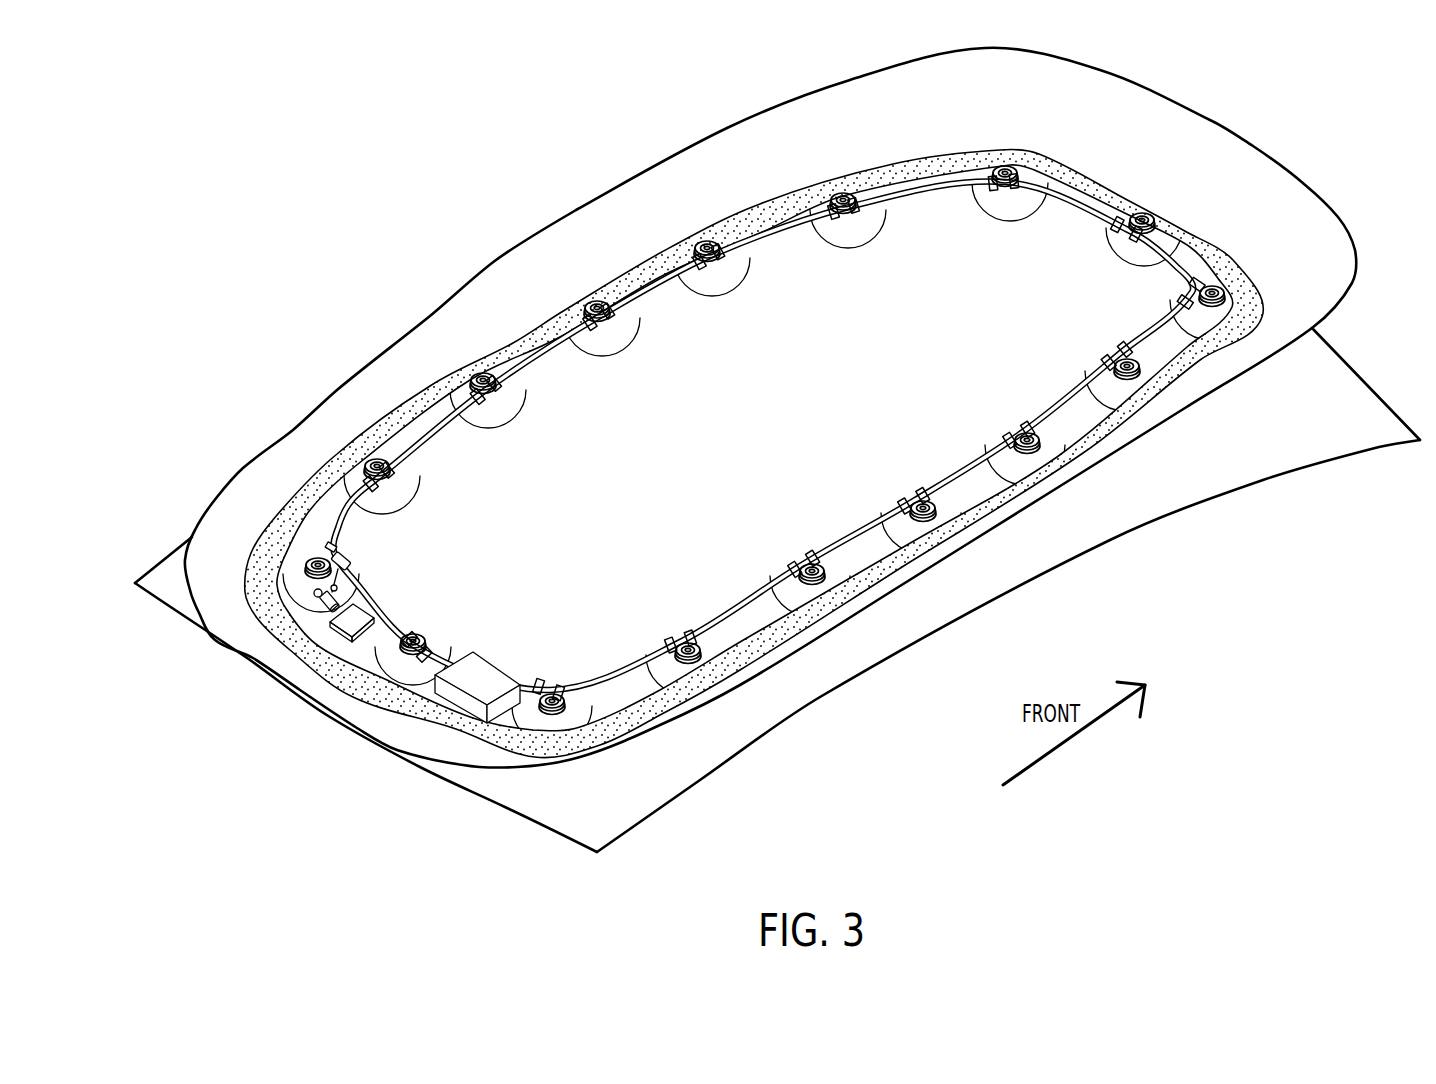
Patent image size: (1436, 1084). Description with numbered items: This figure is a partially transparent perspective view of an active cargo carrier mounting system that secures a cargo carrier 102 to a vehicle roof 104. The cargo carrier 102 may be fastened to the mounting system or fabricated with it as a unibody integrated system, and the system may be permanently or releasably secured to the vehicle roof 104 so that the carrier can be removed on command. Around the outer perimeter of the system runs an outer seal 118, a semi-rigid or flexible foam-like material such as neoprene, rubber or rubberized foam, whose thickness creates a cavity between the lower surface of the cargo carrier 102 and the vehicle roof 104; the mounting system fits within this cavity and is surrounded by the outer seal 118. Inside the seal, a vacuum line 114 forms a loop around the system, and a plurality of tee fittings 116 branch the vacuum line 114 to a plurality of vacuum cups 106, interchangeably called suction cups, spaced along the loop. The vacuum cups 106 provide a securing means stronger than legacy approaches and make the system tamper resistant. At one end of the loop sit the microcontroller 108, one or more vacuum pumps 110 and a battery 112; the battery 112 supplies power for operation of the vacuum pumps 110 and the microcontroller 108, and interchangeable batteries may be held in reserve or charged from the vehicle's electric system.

The cargo carrier 102 is at (243, 466).
The vehicle roof 104 is at (160, 556).
The vacuum cups 106 is at (730, 273).
The microcontroller 108 is at (366, 612).
The vacuum pump 110 is at (353, 582).
The battery 112 is at (478, 668).
The vacuum line 114 is at (543, 358).
The tee fittings 116 is at (622, 318).
The outer seal 118 is at (887, 172).